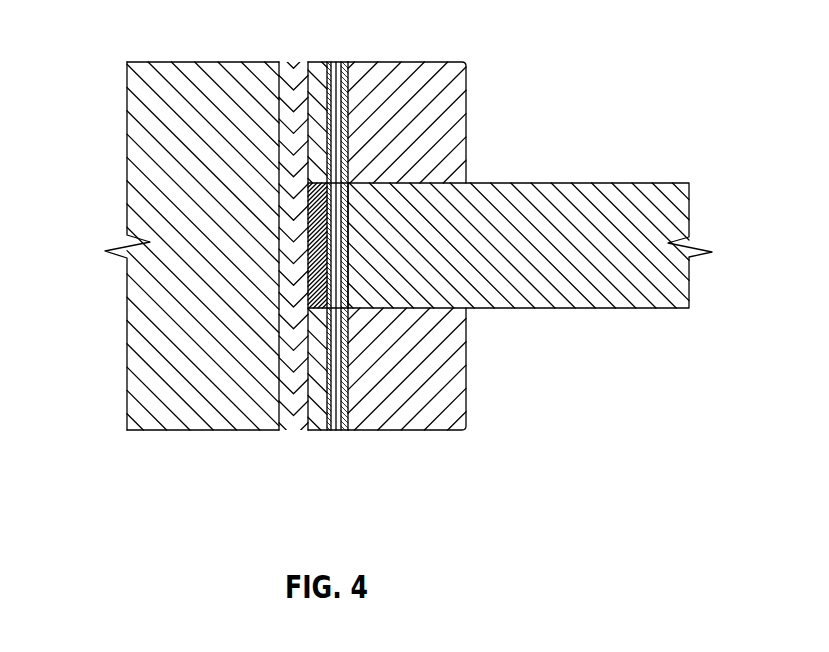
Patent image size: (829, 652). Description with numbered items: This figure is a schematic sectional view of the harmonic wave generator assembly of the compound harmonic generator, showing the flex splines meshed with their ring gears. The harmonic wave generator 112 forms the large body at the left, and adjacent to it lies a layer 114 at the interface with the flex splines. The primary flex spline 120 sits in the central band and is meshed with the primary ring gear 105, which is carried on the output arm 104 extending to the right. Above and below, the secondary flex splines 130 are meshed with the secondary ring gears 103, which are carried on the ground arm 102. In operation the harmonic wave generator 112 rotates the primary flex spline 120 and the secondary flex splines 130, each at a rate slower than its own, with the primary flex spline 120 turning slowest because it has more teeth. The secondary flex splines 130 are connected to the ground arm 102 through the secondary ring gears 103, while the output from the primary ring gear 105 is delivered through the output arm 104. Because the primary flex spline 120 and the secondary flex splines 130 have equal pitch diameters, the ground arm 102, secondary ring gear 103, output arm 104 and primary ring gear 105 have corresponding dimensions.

The ground arm 102 is at (456, 116).
The secondary ring gear 103 is at (336, 93).
The output arm 104 is at (676, 183).
The primary ring gear 105 is at (350, 258).
The harmonic wave generator 112 is at (140, 291).
The bonding layer 114 is at (291, 431).
The primary flex spline 120 is at (337, 282).
The secondary flex spline 130 is at (352, 100).